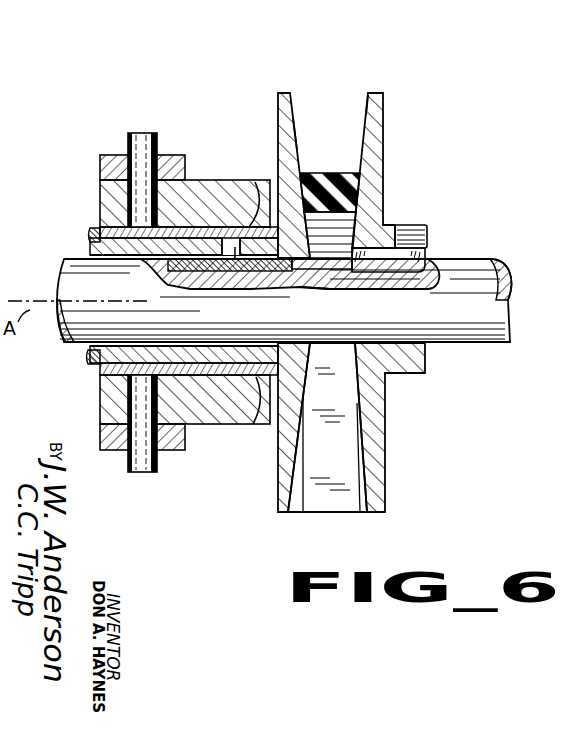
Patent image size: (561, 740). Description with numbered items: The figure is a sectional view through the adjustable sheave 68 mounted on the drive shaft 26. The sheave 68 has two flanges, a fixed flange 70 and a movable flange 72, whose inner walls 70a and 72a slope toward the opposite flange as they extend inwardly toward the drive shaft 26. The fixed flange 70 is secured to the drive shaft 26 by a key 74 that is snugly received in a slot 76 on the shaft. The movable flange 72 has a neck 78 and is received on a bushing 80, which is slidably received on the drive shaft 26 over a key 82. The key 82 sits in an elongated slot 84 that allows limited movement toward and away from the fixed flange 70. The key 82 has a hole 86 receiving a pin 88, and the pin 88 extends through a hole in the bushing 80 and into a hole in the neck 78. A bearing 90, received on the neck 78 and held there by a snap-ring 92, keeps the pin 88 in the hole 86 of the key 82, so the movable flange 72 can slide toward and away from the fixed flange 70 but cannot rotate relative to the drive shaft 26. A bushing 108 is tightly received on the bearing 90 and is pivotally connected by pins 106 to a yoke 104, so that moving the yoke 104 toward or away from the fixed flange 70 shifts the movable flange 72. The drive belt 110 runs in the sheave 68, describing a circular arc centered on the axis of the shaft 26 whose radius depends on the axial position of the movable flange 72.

The drive shaft 26 is at (508, 341).
The adjustable sheave 68 is at (358, 291).
The fixed flange 70 is at (386, 120).
The inner wall 70a is at (372, 103).
The movable flange 72 is at (278, 108).
The inner wall 72a is at (298, 133).
The key 74 is at (425, 255).
The slot 76 is at (438, 276).
The neck 78 is at (108, 223).
The bushing 80 is at (90, 252).
The key 82 is at (185, 278).
The elongated slot 84 is at (333, 283).
The hole 86 is at (237, 280).
The pin 88 is at (240, 245).
The bearing 90 is at (255, 184).
The snap-ring 92 is at (93, 234).
The yoke 104 is at (90, 161).
The pins 106 is at (142, 133).
The bushing 108 is at (212, 179).
The drive belt 110 is at (352, 187).